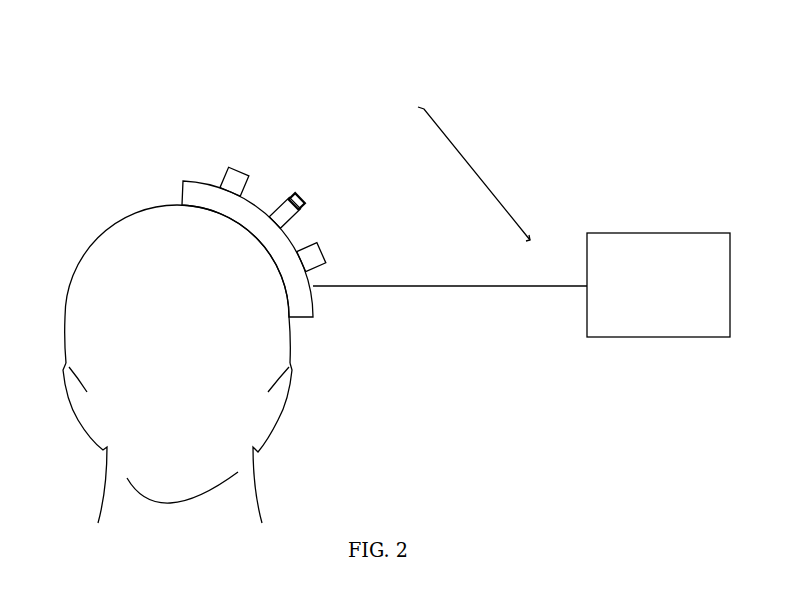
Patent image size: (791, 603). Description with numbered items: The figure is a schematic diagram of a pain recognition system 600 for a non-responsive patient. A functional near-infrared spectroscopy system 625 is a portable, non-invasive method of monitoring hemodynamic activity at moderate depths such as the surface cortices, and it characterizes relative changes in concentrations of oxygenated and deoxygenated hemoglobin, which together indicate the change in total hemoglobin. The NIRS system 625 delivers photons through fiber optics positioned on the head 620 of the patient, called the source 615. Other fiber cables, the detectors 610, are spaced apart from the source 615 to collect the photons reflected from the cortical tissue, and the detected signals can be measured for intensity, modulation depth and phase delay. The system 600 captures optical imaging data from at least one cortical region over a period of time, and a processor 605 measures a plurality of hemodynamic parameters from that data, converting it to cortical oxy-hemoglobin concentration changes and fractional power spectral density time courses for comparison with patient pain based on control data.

The pain recognition system 600 is at (492, 50).
The processor 605 is at (659, 233).
The detector 610 is at (243, 166).
The source 615 is at (304, 190).
The head 620 is at (262, 340).
The functional near-infrared spectroscopy system 625 is at (479, 174).